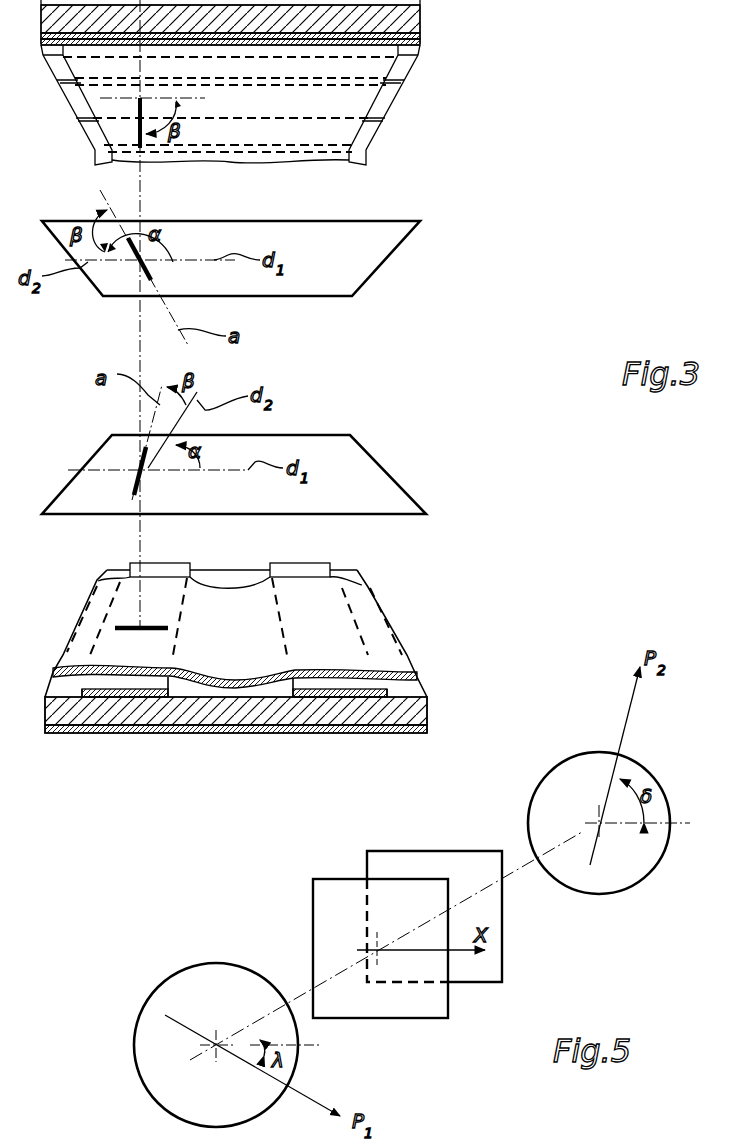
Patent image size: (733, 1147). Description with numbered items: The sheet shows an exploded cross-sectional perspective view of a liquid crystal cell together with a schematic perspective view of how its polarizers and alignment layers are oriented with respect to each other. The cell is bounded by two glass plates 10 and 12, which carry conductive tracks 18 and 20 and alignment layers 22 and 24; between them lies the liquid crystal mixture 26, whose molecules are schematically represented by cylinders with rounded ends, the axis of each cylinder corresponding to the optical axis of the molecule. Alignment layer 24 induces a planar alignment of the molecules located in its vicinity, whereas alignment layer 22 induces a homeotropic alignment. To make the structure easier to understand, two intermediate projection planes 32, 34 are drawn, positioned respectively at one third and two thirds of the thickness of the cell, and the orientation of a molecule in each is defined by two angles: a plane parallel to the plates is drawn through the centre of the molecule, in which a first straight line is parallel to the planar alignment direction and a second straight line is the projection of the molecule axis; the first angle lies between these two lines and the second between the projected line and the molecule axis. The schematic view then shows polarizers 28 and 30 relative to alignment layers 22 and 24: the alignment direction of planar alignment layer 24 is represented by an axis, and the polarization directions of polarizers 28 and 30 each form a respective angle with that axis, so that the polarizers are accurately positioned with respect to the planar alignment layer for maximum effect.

In FIG. 3, the glass plate 10 is at (412, 20).
In FIG. 3, the glass plate 12 is at (106, 720).
In FIG. 3, the conductive track 18 is at (378, 108).
In FIG. 3, the conductive track 20 is at (290, 566).
In FIG. 3, the alignment layer 22 is at (110, 128).
In FIG. 5, the alignment layer 22 is at (326, 890).
In FIG. 3, the alignment layer 24 is at (403, 667).
In FIG. 5, the alignment layer 24 is at (402, 866).
In FIG. 3, the liquid crystal mixture 26 is at (142, 273).
In FIG. 5, the polarizer 28 is at (204, 972).
In FIG. 3, the polarizer 30 is at (190, 729).
In FIG. 5, the polarizer 30 is at (574, 768).
In FIG. 3, the intermediate projection plane 32 is at (377, 478).
In FIG. 3, the intermediate projection plane 34 is at (382, 262).